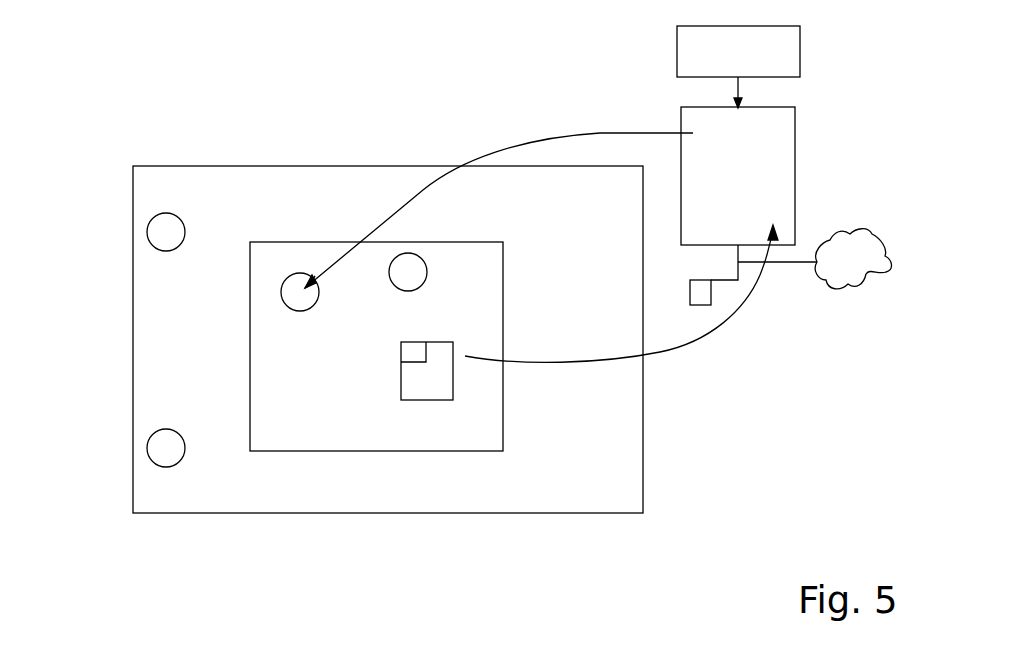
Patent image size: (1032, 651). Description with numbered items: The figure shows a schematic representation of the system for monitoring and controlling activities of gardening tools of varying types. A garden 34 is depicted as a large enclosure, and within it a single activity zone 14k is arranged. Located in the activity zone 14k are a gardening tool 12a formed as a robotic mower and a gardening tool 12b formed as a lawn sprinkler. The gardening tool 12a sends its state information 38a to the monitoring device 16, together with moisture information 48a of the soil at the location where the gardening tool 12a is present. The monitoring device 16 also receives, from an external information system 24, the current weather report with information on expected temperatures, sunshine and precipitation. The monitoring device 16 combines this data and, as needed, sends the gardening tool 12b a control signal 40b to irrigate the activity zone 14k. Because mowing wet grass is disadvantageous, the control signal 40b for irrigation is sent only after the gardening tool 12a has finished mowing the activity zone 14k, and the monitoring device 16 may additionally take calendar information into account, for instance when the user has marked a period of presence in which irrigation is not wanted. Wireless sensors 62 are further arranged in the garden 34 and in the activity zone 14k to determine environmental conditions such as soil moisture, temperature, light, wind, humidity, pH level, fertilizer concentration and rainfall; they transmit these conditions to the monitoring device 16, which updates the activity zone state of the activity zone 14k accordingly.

The garden 34 is at (133, 262).
The wireless sensors 62 is at (164, 213).
The activity zone 14k is at (312, 242).
The gardening tool 12b is at (310, 310).
The gardening tool 12a is at (430, 400).
The control signal 40b is at (537, 140).
The external information system 24 is at (800, 52).
The monitoring device 16 is at (795, 162).
The state information 38a is at (669, 322).
The moisture information 48a is at (700, 342).